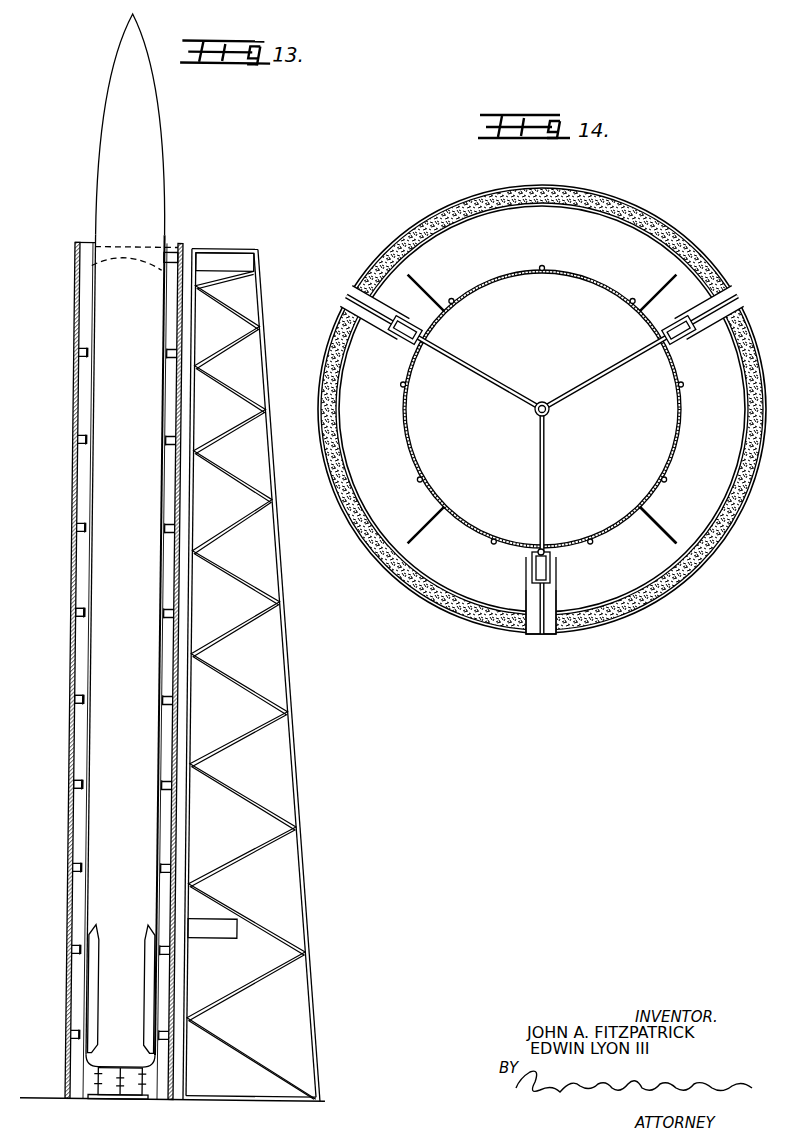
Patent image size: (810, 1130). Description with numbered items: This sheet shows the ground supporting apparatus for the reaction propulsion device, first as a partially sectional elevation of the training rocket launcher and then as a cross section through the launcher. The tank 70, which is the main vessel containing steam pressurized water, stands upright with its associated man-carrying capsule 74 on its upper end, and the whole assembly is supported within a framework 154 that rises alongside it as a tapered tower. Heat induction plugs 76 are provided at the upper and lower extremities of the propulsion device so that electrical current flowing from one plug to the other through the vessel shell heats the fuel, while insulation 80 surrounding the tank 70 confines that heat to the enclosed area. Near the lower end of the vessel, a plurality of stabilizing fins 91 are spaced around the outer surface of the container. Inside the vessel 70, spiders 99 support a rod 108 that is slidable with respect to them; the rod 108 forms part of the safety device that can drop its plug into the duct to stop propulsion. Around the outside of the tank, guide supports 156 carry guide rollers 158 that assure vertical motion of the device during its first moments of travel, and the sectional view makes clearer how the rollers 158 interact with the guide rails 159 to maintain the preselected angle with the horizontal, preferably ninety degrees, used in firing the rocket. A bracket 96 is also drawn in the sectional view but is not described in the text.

In FIG. 13, the main vessel 70 is at (90, 268).
In FIG. 14, the main vessel 70 is at (673, 438).
In FIG. 13, the man-carrying capsule 74 is at (166, 170).
In FIG. 13, the heat induction plugs 76 is at (207, 262).
In FIG. 13, the insulation 80 is at (176, 251).
In FIG. 14, the insulation 80 is at (700, 566).
In FIG. 13, the stabilizing fins 91 is at (152, 978).
In FIG. 14, the stabilizing fins 91 is at (656, 527).
In FIG. 14, the guide bracket 96 is at (678, 394).
In FIG. 14, the spiders 99 is at (490, 383).
In FIG. 14, the rod 108 is at (546, 417).
In FIG. 13, the framework 154 is at (302, 778).
In FIG. 13, the guide supports 156 is at (80, 617).
In FIG. 14, the guide supports 156 is at (556, 606).
In FIG. 13, the guide rollers 158 is at (86, 778).
In FIG. 14, the guide rollers 158 is at (553, 558).
In FIG. 14, the guide rails 159 is at (538, 549).